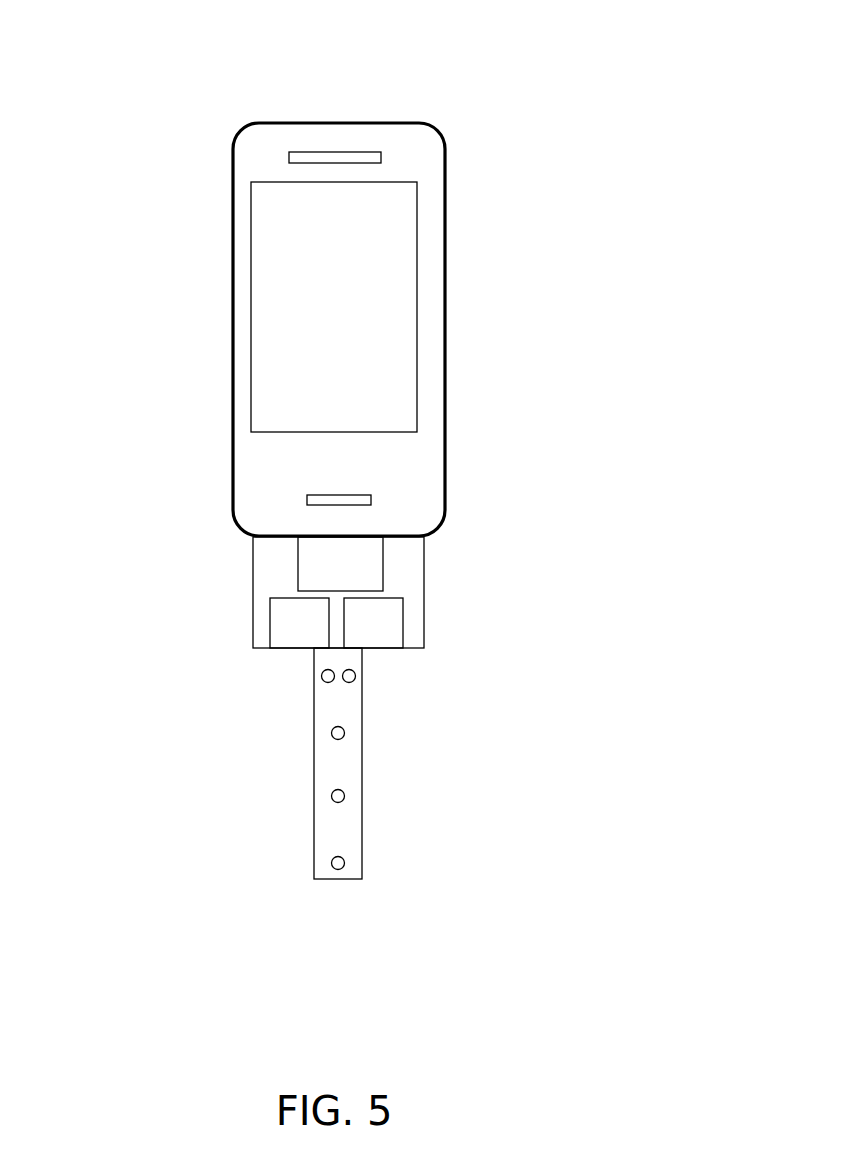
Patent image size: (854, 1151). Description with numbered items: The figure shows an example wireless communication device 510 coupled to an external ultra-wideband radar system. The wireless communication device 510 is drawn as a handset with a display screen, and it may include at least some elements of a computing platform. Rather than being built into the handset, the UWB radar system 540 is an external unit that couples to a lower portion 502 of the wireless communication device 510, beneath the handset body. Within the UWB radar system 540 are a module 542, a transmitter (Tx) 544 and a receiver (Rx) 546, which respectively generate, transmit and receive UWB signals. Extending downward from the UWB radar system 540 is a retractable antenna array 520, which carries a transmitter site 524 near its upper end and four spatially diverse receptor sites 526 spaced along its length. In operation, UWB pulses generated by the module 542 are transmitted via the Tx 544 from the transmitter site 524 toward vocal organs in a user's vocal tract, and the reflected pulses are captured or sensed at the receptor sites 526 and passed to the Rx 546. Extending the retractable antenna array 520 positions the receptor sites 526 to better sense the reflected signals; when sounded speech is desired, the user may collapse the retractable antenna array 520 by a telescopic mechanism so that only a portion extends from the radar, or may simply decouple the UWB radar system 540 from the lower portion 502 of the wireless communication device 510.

The wireless communication device 510 is at (420, 116).
The lower portion 502 is at (224, 532).
The UWB radar system 540 is at (439, 584).
The module 542 is at (340, 564).
The transmitter (Tx) 544 is at (299, 623).
The receiver (Rx) 546 is at (373, 623).
The retractable antenna array 520 is at (373, 804).
The transmitter site 524 is at (372, 678).
The receptor sites 526 is at (308, 680).